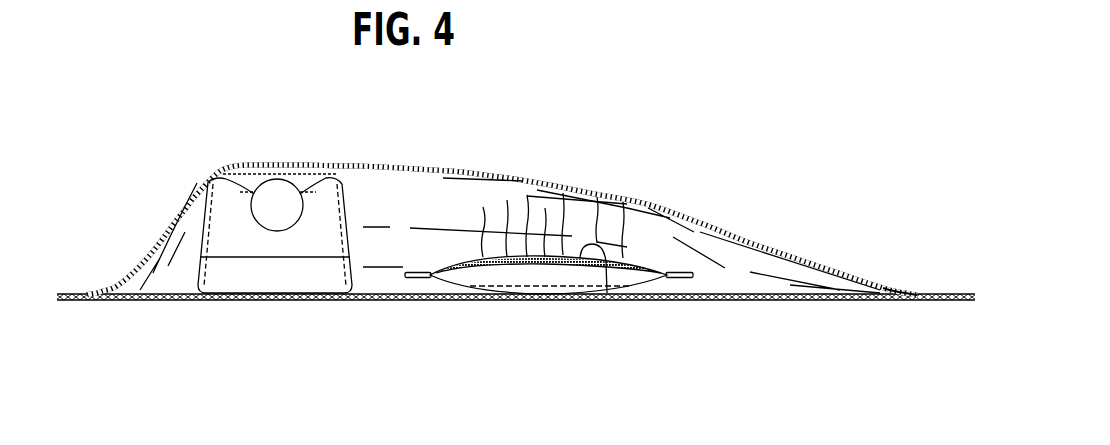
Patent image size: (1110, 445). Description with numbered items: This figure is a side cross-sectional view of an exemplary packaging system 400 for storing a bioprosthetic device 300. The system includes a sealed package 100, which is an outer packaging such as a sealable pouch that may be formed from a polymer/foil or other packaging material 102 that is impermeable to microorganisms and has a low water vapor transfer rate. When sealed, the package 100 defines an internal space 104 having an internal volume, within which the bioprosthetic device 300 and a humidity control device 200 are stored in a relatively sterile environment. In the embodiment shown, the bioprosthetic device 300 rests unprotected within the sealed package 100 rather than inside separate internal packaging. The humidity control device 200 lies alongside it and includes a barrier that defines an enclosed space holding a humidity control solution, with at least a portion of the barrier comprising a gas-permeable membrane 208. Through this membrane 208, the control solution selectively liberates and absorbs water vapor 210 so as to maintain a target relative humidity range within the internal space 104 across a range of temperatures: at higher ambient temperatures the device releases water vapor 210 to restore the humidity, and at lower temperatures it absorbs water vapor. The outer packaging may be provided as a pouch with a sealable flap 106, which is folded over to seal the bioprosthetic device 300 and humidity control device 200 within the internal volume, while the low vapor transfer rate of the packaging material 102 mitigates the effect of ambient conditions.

The packaging system 400 is at (722, 62).
The sealed package 100 is at (712, 195).
The packaging material 102 is at (765, 250).
The internal space 104 is at (493, 222).
The sealable flap 106 is at (926, 278).
The bioprosthetic device 300 is at (375, 194).
The water vapor 210 is at (528, 206).
The humidity control device 200 is at (685, 300).
The gas-permeable membrane 208 is at (607, 293).